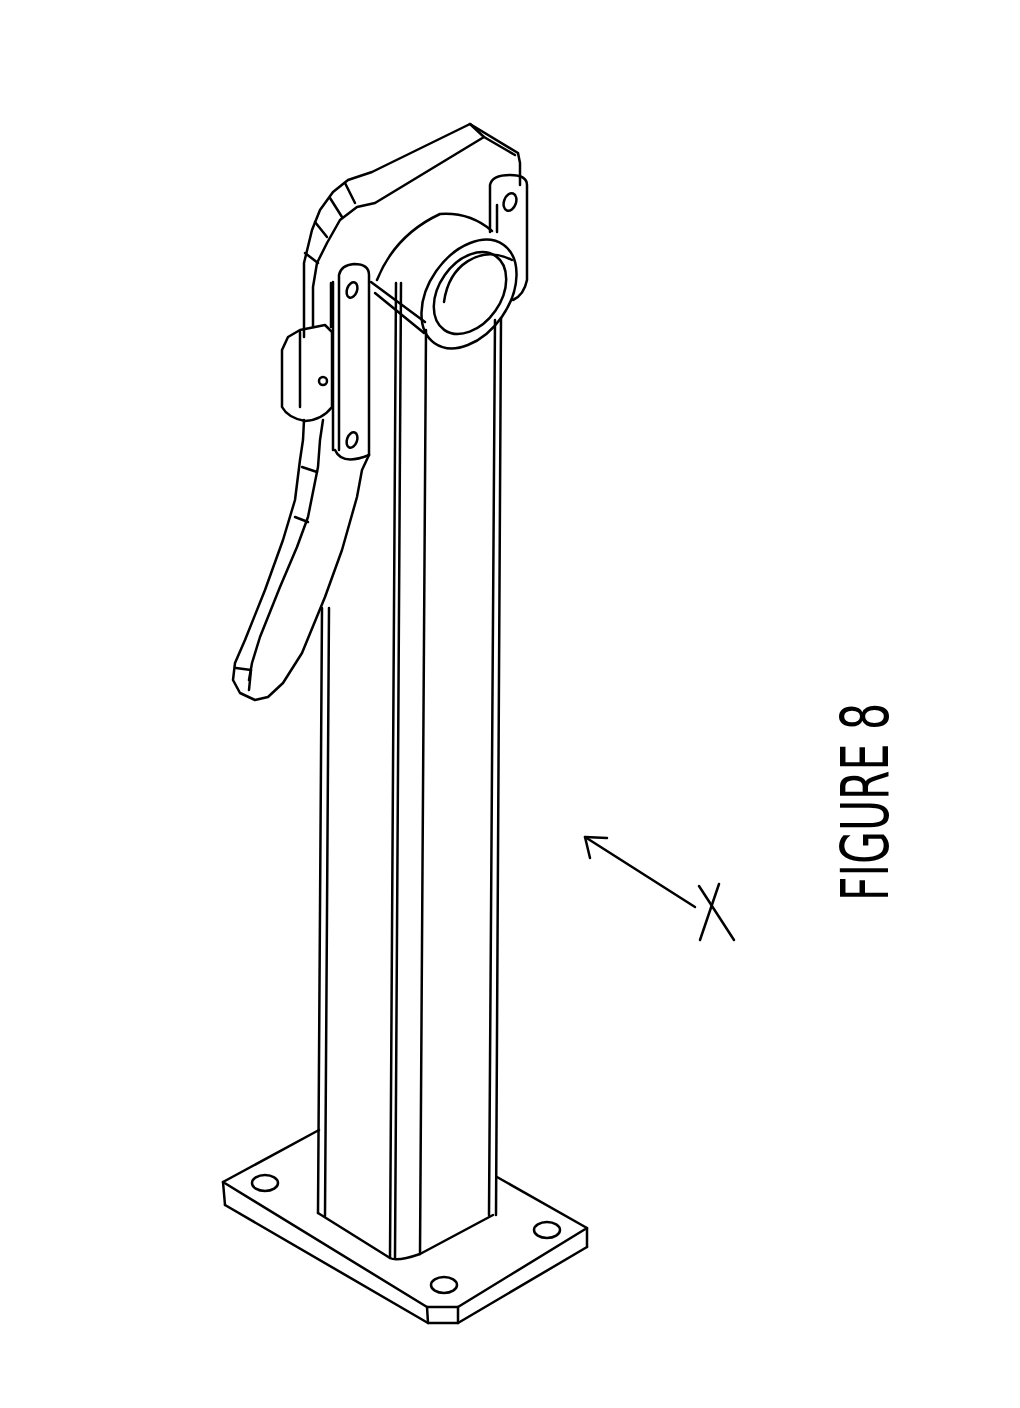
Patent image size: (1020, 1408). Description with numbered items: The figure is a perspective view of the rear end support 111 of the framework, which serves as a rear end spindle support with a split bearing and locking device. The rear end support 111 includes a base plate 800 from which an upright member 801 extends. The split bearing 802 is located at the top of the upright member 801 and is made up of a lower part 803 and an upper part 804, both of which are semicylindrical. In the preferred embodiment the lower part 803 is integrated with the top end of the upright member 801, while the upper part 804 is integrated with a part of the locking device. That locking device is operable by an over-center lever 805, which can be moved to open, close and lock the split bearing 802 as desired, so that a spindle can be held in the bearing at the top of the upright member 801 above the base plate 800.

The rear end support 111 is at (848, 508).
The base plate 800 is at (327, 1235).
The upright member 801 is at (350, 888).
The split bearing 802 is at (381, 237).
The lower part 803 is at (467, 303).
The upper part 804 is at (445, 256).
The over-center lever 805 is at (217, 491).